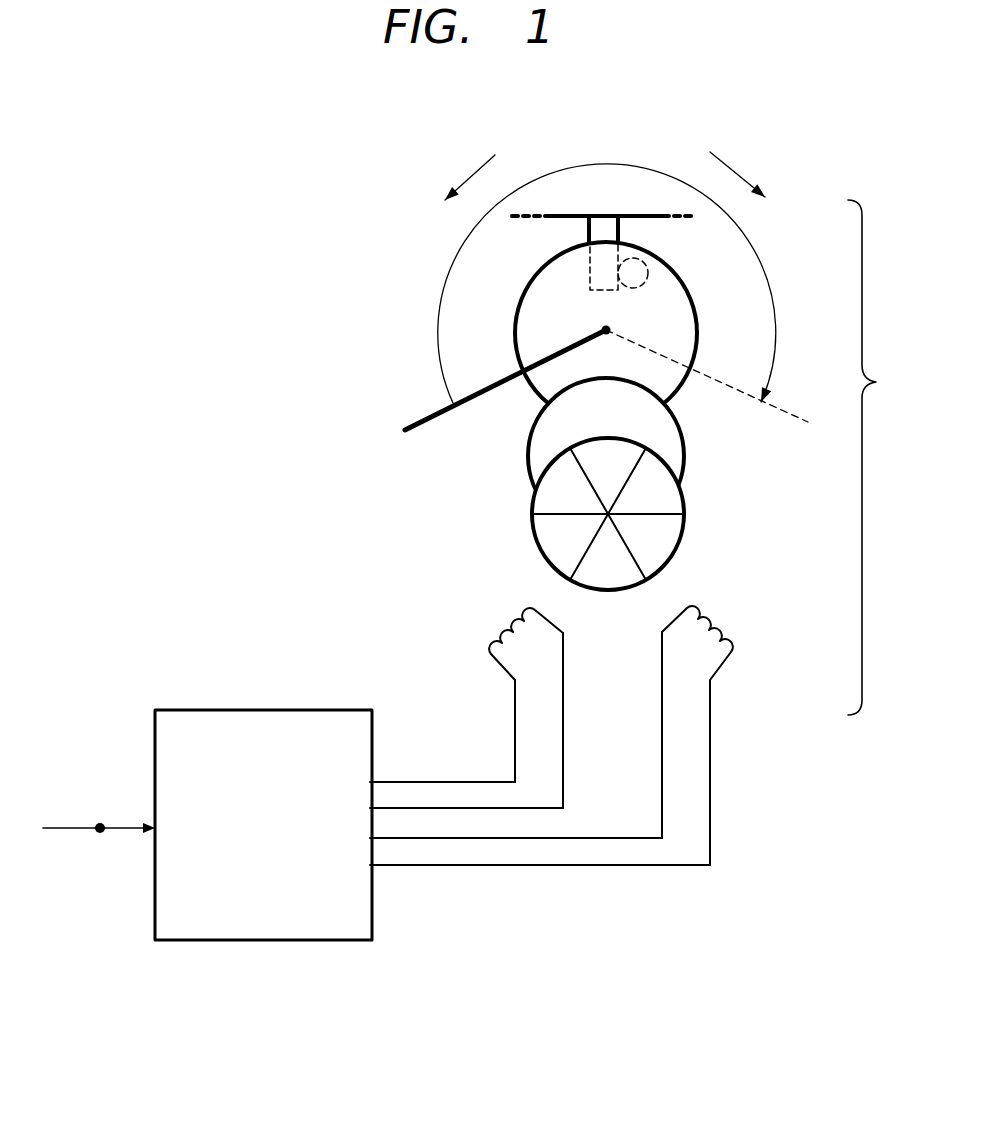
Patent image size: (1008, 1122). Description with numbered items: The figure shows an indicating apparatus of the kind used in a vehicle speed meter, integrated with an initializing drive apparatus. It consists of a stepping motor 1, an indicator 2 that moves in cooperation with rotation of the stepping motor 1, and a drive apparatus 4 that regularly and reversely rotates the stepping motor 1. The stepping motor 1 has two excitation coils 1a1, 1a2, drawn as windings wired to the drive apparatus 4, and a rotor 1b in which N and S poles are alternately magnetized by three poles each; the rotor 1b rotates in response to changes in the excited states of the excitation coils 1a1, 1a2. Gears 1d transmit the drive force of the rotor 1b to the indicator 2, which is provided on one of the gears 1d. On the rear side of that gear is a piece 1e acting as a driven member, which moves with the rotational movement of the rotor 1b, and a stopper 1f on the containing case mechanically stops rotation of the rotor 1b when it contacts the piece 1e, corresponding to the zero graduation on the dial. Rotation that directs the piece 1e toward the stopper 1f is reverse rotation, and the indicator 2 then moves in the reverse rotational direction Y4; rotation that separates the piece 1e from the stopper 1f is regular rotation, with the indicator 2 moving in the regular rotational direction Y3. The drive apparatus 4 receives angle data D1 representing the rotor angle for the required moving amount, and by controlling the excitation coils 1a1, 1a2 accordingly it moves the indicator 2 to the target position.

The stepping motor 1 is at (693, 532).
The excitation coil 1a1 is at (730, 613).
The excitation coil 1a2 is at (537, 655).
The rotor 1b is at (687, 498).
The gears 1d is at (686, 383).
The piece 1e is at (648, 272).
The stopper 1f is at (590, 268).
The indicator 2 is at (488, 383).
The drive apparatus 4 is at (305, 710).
The angle data D1 is at (98, 823).
The regular rotational direction Y3 is at (738, 175).
The reverse rotational direction Y4 is at (470, 178).